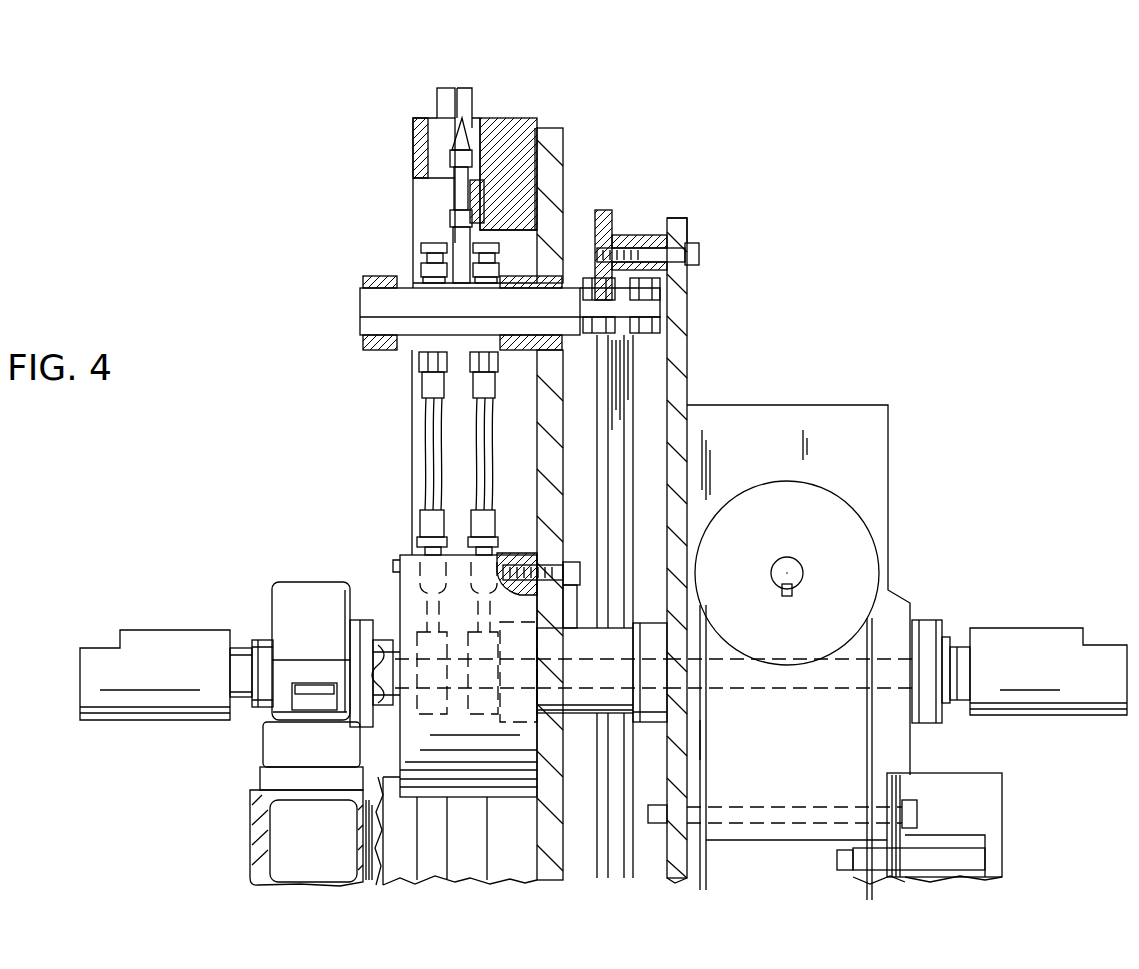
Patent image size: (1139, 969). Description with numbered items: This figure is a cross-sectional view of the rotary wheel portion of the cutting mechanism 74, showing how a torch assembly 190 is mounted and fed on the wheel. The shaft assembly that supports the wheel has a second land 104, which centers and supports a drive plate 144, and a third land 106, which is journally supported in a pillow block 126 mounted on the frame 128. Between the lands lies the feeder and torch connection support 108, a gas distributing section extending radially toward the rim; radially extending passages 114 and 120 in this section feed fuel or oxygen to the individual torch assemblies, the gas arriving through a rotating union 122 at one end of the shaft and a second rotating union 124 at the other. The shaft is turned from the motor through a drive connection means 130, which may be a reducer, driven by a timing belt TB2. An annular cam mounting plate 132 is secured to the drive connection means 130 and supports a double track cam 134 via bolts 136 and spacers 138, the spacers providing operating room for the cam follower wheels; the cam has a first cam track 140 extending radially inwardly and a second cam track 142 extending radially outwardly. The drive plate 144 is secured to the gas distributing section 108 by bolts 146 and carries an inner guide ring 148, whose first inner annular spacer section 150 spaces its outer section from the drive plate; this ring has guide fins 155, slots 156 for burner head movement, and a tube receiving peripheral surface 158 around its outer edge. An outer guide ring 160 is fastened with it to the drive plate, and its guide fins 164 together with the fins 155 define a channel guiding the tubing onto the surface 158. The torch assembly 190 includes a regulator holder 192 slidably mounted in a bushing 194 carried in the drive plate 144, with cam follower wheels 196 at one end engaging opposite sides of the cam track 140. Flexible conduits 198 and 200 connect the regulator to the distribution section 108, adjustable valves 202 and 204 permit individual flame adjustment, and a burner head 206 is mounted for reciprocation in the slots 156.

The cutting mechanism 74 is at (676, 224).
The second land 104 is at (596, 637).
The third land 106 is at (263, 640).
The feeder and torch connection support 108 is at (398, 564).
The radially extending passages 114 is at (513, 542).
The radially extending passages 120 is at (393, 538).
The rotating union 122 is at (1024, 628).
The second rotating union 124 is at (173, 630).
The pillow block 126 is at (295, 600).
The frame 128 is at (265, 812).
The drive connection means 130 is at (896, 486).
The cam mounting plate 132 is at (675, 356).
The double track cam 134 is at (597, 240).
The bolts 136 is at (702, 256).
The spacers 138 is at (663, 232).
The first cam track 140 is at (613, 517).
The second cam track 142 is at (619, 235).
The drive plate 144 is at (557, 138).
The bolts 146 is at (571, 560).
The inner guide ring 148 is at (521, 133).
The first inner annular spacer section 150 is at (530, 243).
The guide fins 155 is at (472, 92).
The slots 156 is at (476, 118).
The tube receiving peripheral surface 158 is at (457, 93).
The outer guide ring 160 is at (420, 163).
The guide fins 164 is at (435, 102).
The torch assembly 190 is at (454, 170).
The regulator holder 192 is at (358, 312).
The bushing 194 is at (570, 340).
The cam follower wheels 196 is at (680, 283).
The flexible conduit 198 is at (493, 483).
The flexible conduit 200 is at (423, 450).
The adjustable valve 202 is at (488, 250).
The adjustable valve 204 is at (418, 247).
The burner head 206 is at (447, 140).
The timing belt TB2 is at (720, 740).